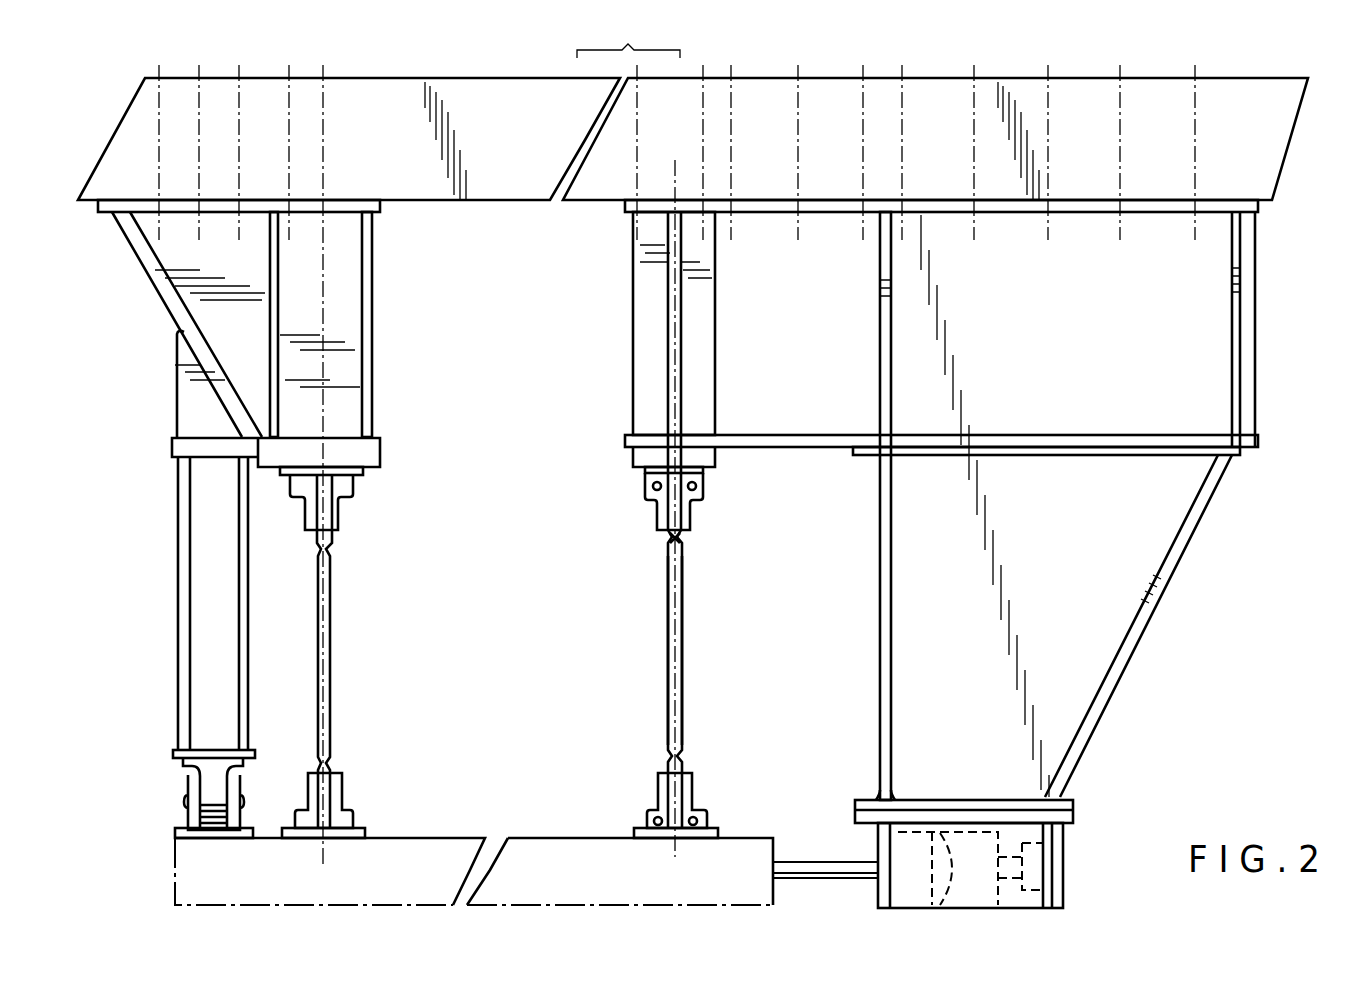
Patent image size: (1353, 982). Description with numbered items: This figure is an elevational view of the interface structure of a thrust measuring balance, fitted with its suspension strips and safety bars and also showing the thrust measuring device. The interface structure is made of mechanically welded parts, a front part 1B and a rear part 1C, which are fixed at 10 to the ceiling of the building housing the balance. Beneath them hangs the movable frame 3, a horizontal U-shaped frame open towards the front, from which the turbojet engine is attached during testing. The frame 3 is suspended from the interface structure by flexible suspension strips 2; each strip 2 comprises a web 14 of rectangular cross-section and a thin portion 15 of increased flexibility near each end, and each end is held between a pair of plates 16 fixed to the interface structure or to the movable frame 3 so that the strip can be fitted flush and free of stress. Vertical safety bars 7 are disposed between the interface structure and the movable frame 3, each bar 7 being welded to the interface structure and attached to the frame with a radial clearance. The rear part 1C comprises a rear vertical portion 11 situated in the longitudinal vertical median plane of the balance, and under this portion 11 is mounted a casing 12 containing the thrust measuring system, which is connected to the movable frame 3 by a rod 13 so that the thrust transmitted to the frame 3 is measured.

The fixing point to the ceiling 10 is at (200, 157).
The front part of the interface structure 1B is at (165, 262).
The rear part of the interface structure 1C is at (1218, 312).
The rear vertical portion 11 is at (1132, 613).
The vertical safety bar 7 is at (193, 657).
The flexible suspension strip 2 is at (327, 627).
The web 14 is at (665, 655).
The thin portion 15 is at (667, 534).
The plate 16 is at (338, 516).
The movable frame 3 is at (582, 850).
The rod 13 is at (822, 862).
The casing 12 is at (1033, 897).